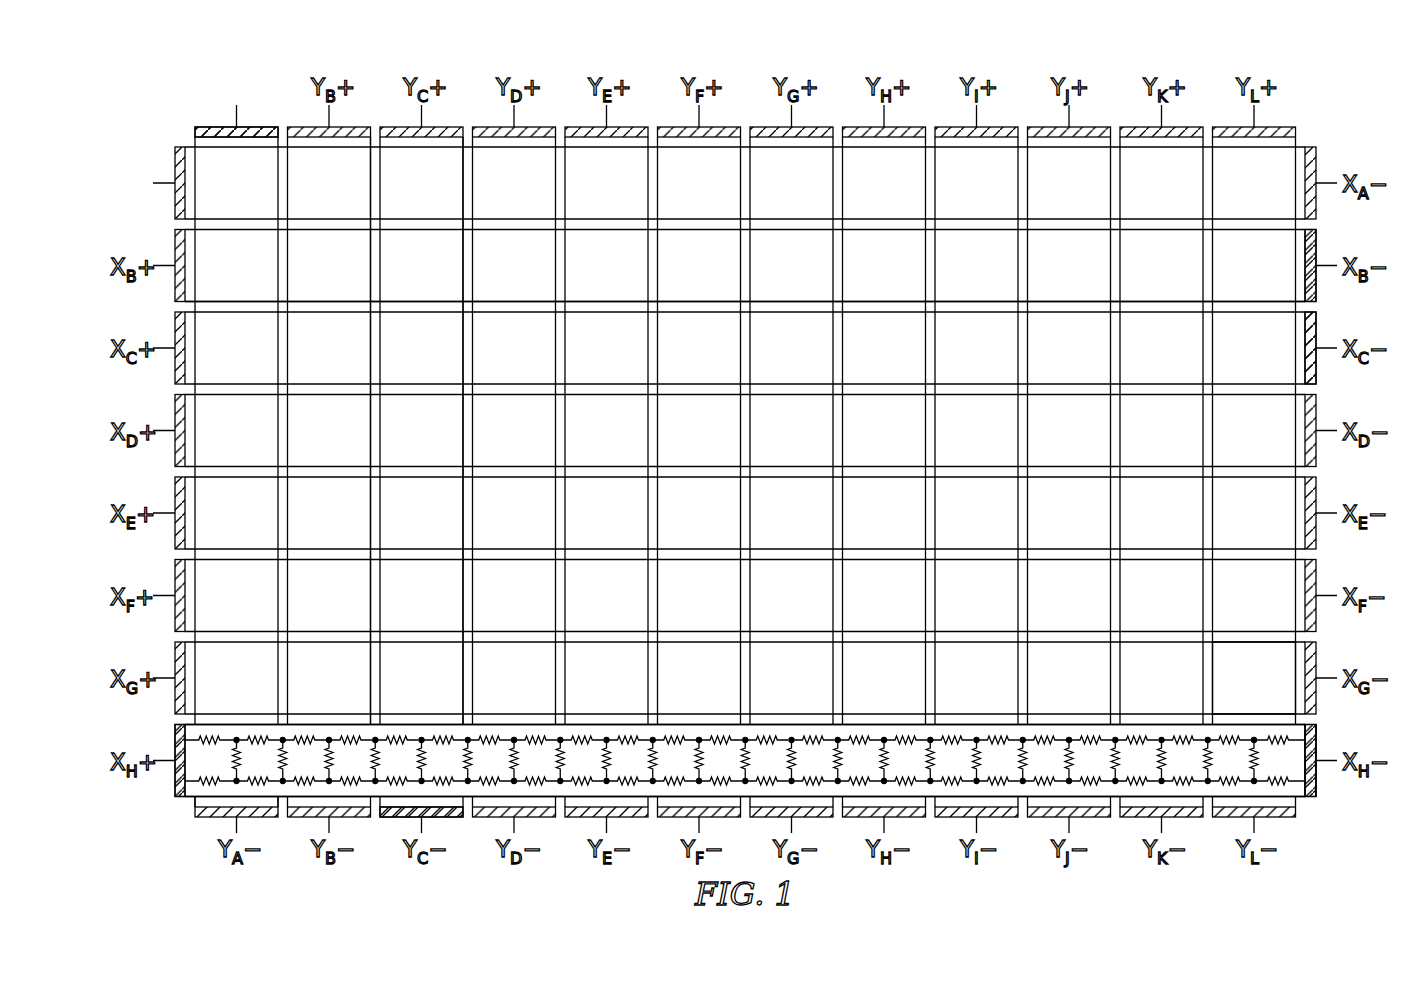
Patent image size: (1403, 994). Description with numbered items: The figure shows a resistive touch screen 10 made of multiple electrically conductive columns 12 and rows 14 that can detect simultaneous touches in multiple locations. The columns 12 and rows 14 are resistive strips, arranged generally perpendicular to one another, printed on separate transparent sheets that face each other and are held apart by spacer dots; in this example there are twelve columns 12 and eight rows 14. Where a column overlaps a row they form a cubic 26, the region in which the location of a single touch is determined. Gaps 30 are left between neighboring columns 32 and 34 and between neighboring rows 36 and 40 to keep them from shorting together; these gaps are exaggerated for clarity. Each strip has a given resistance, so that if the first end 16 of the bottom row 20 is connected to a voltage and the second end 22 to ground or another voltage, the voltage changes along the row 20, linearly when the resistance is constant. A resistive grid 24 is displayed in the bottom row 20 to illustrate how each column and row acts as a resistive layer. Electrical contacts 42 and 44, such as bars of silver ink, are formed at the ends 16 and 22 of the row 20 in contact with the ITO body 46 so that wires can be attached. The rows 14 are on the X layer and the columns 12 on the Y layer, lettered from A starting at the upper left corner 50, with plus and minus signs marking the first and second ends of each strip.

The resistive touch screen 10 is at (1352, 114).
The columns 12 is at (203, 83).
The rows 14 is at (122, 163).
The first end 16 is at (175, 777).
The row 20 is at (188, 797).
The second end 22 is at (1318, 775).
The resistive grid 24 is at (1260, 782).
The cubic 26 is at (1267, 691).
The gap 30 is at (375, 307).
The column 32 is at (362, 126).
The column 34 is at (455, 126).
The row 36 is at (1317, 252).
The row 40 is at (1317, 333).
The electrical contact 42 is at (175, 744).
The electrical contact 44 is at (1317, 742).
The body 46 is at (377, 800).
The upper left corner 50 is at (184, 136).